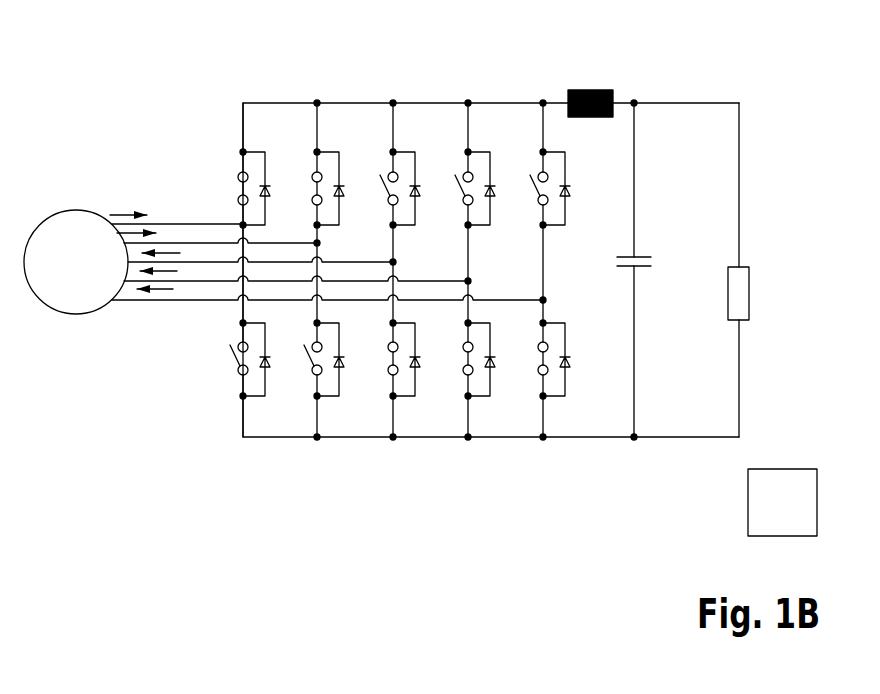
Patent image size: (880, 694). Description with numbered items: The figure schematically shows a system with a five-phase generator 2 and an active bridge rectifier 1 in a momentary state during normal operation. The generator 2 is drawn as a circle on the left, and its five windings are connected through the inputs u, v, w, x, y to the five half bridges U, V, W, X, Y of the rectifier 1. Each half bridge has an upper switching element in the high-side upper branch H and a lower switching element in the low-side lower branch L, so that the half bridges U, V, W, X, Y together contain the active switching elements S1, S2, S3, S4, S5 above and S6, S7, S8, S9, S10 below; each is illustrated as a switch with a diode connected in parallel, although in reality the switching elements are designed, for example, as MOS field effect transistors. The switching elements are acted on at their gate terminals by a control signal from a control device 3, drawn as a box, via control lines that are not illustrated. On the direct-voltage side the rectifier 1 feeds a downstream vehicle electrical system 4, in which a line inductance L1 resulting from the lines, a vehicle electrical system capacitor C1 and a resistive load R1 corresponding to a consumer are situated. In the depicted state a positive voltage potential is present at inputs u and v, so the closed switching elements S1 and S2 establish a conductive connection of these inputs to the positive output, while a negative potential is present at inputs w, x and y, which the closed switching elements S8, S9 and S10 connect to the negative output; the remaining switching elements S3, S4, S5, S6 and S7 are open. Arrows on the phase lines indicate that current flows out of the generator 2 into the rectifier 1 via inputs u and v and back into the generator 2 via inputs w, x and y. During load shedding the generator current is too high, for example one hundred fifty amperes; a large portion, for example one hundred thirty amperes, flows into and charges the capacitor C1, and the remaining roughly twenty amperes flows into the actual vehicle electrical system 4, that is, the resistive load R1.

The bridge rectifier 1 is at (608, 76).
The generator 2 is at (77, 209).
The control device 3 is at (779, 468).
The vehicle electrical system 4 is at (719, 232).
The line inductance L1 is at (595, 88).
The vehicle electrical system capacitor C1 is at (642, 255).
The resistive load R1 is at (754, 287).
The upper branch H is at (483, 185).
The lower branch L is at (477, 334).
The active switching element S1 is at (269, 181).
The active switching element S2 is at (344, 181).
The active switching element S3 is at (419, 181).
The active switching element S4 is at (494, 181).
The active switching element S5 is at (569, 193).
The active switching element S6 is at (273, 369).
The active switching element S7 is at (348, 369).
The active switching element S8 is at (423, 369).
The active switching element S9 is at (498, 369).
The active switching element S10 is at (580, 349).
The half bridge U is at (241, 95).
The half bridge V is at (318, 95).
The half bridge W is at (393, 95).
The half bridge X is at (468, 95).
The half bridge Y is at (543, 95).
The input u is at (173, 222).
The input v is at (201, 241).
The input w is at (206, 264).
The input x is at (175, 283).
The input y is at (148, 302).